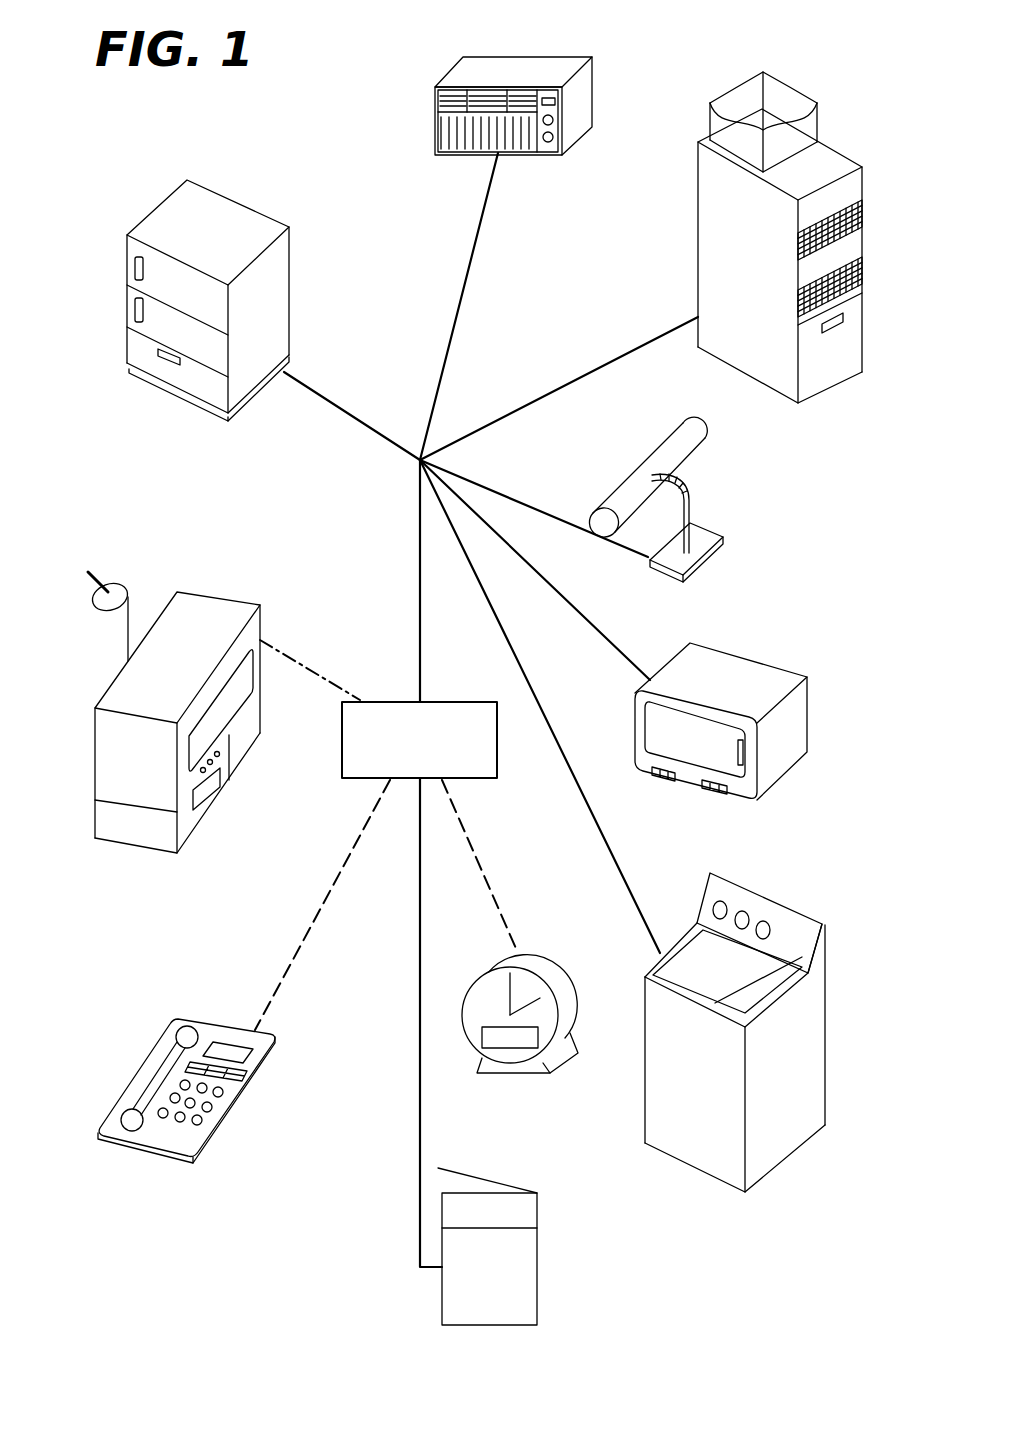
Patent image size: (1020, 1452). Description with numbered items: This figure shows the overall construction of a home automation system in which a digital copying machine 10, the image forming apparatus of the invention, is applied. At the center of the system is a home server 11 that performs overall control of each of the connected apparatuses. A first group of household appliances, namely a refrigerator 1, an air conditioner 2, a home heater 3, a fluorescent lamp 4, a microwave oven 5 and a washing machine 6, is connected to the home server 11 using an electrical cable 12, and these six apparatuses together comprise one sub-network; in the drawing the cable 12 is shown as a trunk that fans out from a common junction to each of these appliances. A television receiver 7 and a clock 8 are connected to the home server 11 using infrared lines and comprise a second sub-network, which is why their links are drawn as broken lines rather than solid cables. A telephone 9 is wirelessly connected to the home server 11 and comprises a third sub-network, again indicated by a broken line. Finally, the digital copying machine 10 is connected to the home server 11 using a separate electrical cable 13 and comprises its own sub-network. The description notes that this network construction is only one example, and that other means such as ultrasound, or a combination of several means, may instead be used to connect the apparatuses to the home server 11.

The refrigerator 1 is at (238, 198).
The air conditioner 2 is at (523, 57).
The home heater 3 is at (845, 155).
The fluorescent lamp 4 is at (697, 512).
The microwave oven 5 is at (743, 655).
The washing machine 6 is at (770, 900).
The television receiver 7 is at (112, 685).
The clock 8 is at (512, 1075).
The telephone 9 is at (237, 1117).
The digital copying machine 10 is at (537, 1288).
The home server 11 is at (440, 702).
The electrical cable 12 is at (418, 567).
The electrical cable 13 is at (418, 1030).